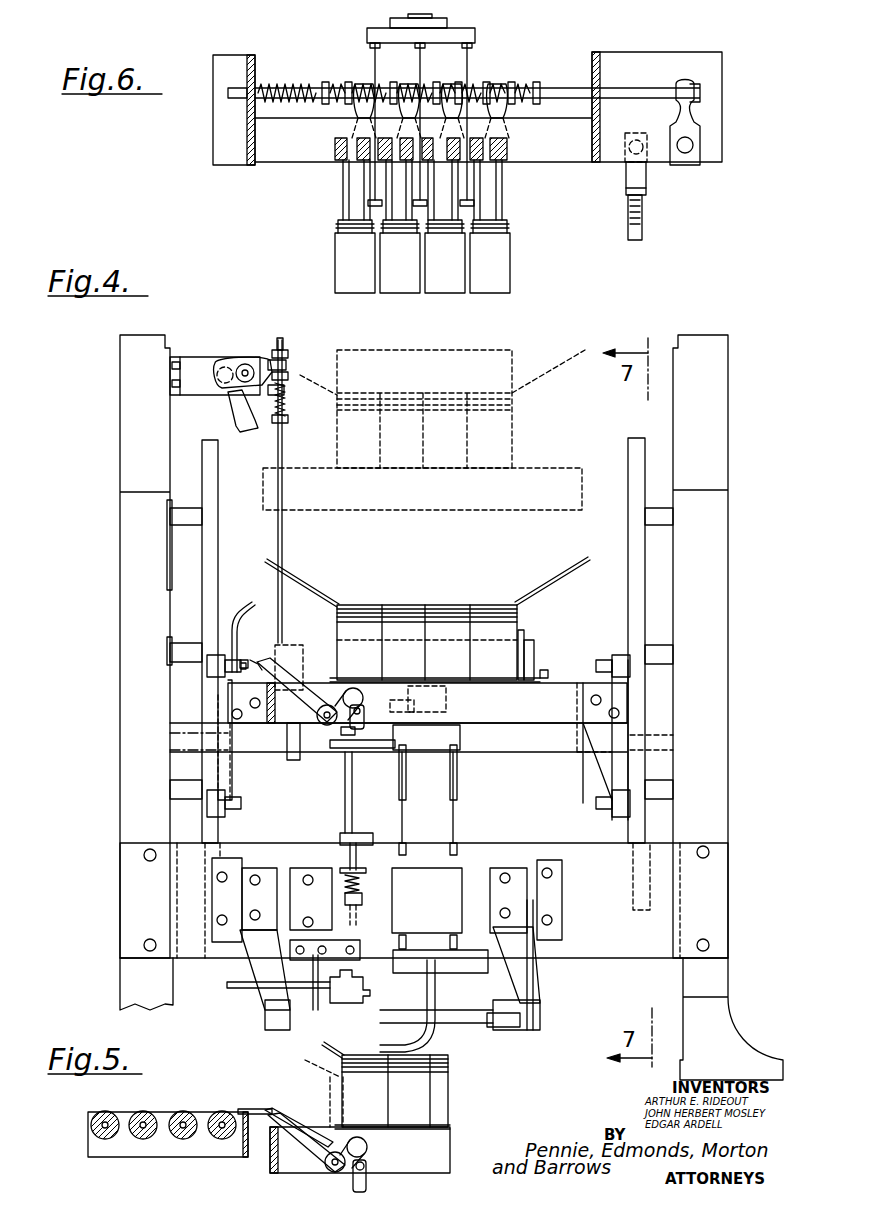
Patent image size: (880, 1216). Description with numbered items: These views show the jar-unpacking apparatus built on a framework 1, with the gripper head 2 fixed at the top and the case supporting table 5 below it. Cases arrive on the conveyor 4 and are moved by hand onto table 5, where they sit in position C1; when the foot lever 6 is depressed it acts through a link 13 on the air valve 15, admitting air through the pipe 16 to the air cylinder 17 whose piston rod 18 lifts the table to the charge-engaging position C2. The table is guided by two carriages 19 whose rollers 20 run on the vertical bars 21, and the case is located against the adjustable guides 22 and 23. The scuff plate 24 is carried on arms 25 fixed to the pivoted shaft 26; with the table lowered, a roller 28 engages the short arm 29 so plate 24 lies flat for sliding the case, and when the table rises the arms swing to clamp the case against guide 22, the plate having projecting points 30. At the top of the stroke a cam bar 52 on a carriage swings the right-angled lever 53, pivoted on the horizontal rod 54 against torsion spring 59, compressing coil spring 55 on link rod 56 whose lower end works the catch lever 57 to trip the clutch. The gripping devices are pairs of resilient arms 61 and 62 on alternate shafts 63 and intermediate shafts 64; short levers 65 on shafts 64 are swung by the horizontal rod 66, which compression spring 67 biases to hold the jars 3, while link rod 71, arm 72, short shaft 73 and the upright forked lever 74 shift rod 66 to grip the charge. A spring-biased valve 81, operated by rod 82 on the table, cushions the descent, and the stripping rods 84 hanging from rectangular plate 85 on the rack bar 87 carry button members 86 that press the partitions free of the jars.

In FIG. 6, the framework 1 is at (710, 66).
In FIG. 4, the framework 1 is at (120, 412).
In FIG. 6, the gripper head 2 is at (332, 188).
In FIG. 6, the jars 3 is at (490, 283).
In FIG. 4, the jars 3 is at (340, 440).
In FIG. 5, the jars 3 is at (436, 1132).
In FIG. 5, the conveyor 4 is at (160, 1157).
In FIG. 4, the case supporting table 5 is at (515, 723).
In FIG. 5, the case supporting table 5 is at (452, 1147).
In FIG. 4, the foot lever 6 is at (305, 1030).
In FIG. 4, the link 13 is at (352, 978).
In FIG. 4, the air valve 15 is at (262, 995).
In FIG. 4, the pipe 16 is at (432, 1003).
In FIG. 4, the air cylinder 17 is at (438, 820).
In FIG. 4, the piston rod 18 is at (440, 713).
In FIG. 4, the carriages 19 is at (238, 776).
In FIG. 4, the rollers 20 is at (215, 657).
In FIG. 4, the vertical bars 21 is at (208, 551).
In FIG. 4, the adjustable guide 22 is at (530, 660).
In FIG. 4, the adjustable guide 23 is at (528, 645).
In FIG. 4, the scuff plate 24 is at (262, 664).
In FIG. 5, the scuff plate 24 is at (258, 1110).
In FIG. 4, the arms 25 is at (310, 678).
In FIG. 5, the arms 25 is at (330, 1112).
In FIG. 4, the pivoted shaft 26 is at (326, 725).
In FIG. 5, the pivoted shaft 26 is at (334, 1173).
In FIG. 4, the roller 28 is at (364, 710).
In FIG. 5, the roller 28 is at (368, 1168).
In FIG. 4, the short arm 29 is at (356, 688).
In FIG. 5, the short arm 29 is at (360, 1137).
In FIG. 5, the projecting points 30 is at (283, 1110).
In FIG. 4, the cam bar 52 is at (246, 608).
In FIG. 4, the right-angled lever 53 is at (287, 360).
In FIG. 4, the horizontal rod 54 is at (248, 365).
In FIG. 4, the coil spring 55 is at (286, 397).
In FIG. 4, the link rod 56 is at (283, 548).
In FIG. 4, the catch lever 57 is at (293, 762).
In FIG. 4, the torsion spring 59 is at (222, 393).
In FIG. 6, the resilient arms 61 is at (385, 190).
In FIG. 6, the resilient arms 62 is at (365, 172).
In FIG. 6, the alternate shafts 63 is at (335, 147).
In FIG. 6, the intermediate shafts 64 is at (508, 147).
In FIG. 6, the short levers 65 is at (500, 88).
In FIG. 6, the horizontal rod 66 is at (560, 90).
In FIG. 6, the compression spring 67 is at (280, 88).
In FIG. 6, the link rod 71 is at (644, 230).
In FIG. 6, the arm 72 is at (665, 130).
In FIG. 6, the short shaft 73 is at (690, 145).
In FIG. 6, the upright forked lever 74 is at (700, 110).
In FIG. 4, the spring-biased valve 81 is at (344, 870).
In FIG. 4, the rod 82 is at (344, 798).
In FIG. 6, the vertical rods 84 is at (373, 65).
In FIG. 6, the rectangular plate 85 is at (475, 35).
In FIG. 6, the button members 86 is at (462, 204).
In FIG. 6, the rack bar 87 is at (415, 20).
In FIG. 4, the case position C1 is at (520, 614).
In FIG. 5, the case position C1 is at (452, 1098).
In FIG. 4, the charge-engaging position C2 is at (514, 445).